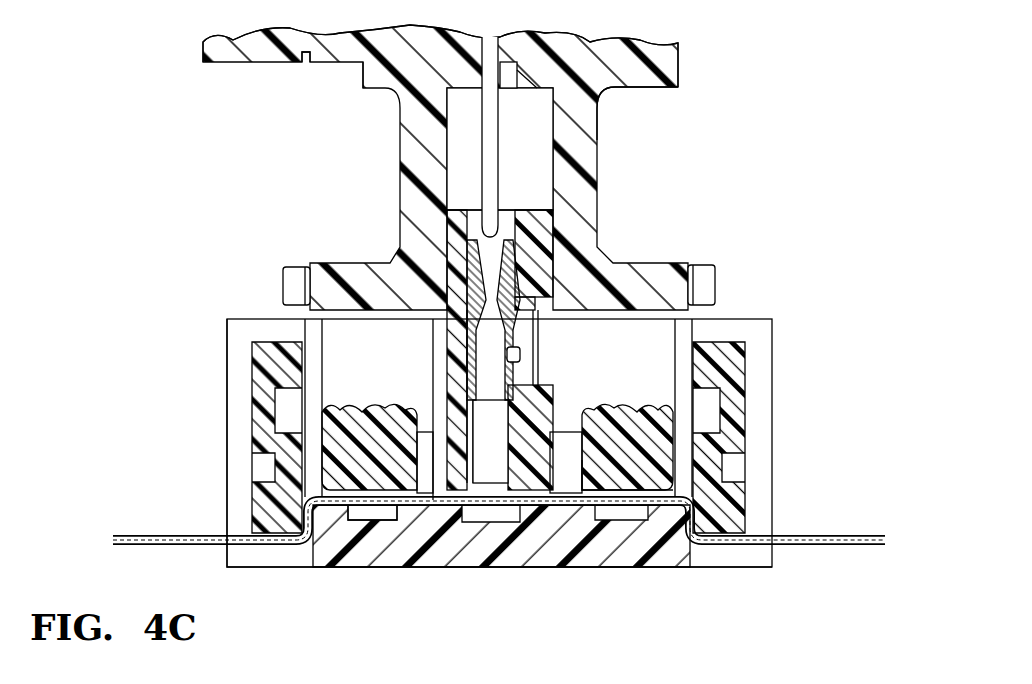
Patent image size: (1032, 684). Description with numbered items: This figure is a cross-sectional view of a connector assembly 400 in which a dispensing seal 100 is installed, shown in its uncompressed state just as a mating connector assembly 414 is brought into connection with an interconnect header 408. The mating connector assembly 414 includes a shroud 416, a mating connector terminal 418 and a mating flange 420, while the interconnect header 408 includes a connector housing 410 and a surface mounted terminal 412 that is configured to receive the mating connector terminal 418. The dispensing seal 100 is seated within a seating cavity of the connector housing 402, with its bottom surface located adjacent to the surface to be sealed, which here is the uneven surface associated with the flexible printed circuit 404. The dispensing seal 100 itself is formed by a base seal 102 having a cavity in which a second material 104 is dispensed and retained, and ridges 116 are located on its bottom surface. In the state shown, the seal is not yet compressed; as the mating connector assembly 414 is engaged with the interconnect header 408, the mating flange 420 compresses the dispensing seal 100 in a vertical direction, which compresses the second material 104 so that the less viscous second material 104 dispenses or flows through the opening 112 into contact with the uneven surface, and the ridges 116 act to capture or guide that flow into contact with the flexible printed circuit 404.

The dispensing seal 100 is at (673, 420).
The base seal 102 is at (660, 483).
The second material 104 is at (645, 443).
The opening 112 is at (368, 492).
The ridges 116 is at (337, 499).
The connector assembly 400 is at (221, 345).
The connector housing 402 is at (767, 320).
The flexible printed circuit 404 is at (138, 530).
The interconnect header 408 is at (520, 242).
The connector housing 410 is at (556, 262).
The surface mounted terminal 412 is at (480, 240).
The mating connector assembly 414 is at (690, 40).
The shroud 416 is at (676, 88).
The mating connector terminal 418 is at (490, 128).
The mating flange 420 is at (322, 265).